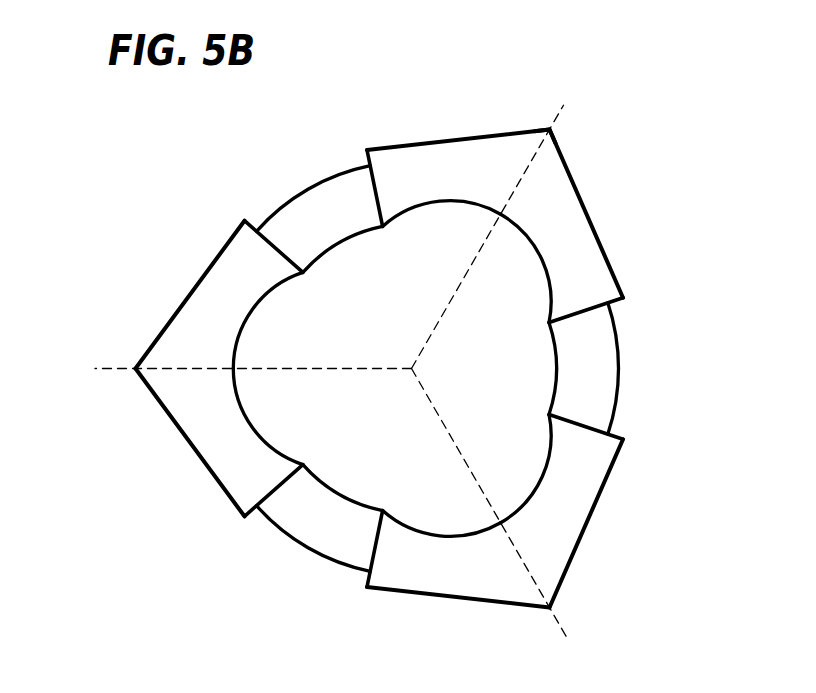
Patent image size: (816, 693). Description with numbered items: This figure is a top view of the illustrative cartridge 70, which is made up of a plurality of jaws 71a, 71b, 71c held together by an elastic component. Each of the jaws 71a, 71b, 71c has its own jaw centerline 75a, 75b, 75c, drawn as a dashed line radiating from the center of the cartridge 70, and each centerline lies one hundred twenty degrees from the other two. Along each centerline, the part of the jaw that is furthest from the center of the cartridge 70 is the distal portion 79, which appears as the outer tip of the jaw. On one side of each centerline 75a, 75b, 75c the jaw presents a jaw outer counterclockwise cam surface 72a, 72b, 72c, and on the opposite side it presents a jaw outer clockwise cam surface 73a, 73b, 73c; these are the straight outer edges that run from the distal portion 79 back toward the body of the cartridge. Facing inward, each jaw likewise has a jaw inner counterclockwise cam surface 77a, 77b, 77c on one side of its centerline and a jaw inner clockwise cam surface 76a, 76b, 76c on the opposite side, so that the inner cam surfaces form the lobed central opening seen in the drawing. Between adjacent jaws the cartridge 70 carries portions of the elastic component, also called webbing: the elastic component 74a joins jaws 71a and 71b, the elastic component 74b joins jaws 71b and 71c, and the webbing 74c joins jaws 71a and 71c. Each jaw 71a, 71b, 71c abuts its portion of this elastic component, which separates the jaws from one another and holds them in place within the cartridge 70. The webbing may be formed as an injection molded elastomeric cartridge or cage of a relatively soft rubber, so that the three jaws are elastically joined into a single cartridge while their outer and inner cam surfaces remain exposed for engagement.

The cartridge 70 is at (243, 153).
The jaw 71a is at (482, 157).
The jaw 71b is at (603, 448).
The jaw 71c is at (183, 317).
The jaw outer counterclockwise cam surface 72a is at (412, 142).
The jaw outer counterclockwise cam surface 72b is at (590, 517).
The jaw outer counterclockwise cam surface 72c is at (173, 427).
The jaw outer clockwise cam surface 73a is at (602, 243).
The jaw outer clockwise cam surface 73b is at (450, 602).
The jaw outer clockwise cam surface 73c is at (217, 254).
The elastic component 74a is at (542, 348).
The elastic component 74b is at (328, 482).
The webbing 74c is at (347, 237).
The jaw centerline 75a is at (558, 113).
The jaw centerline 75b is at (560, 627).
The jaw centerline 75c is at (112, 372).
The jaw inner clockwise cam surface 76a is at (530, 247).
The jaw inner clockwise cam surface 76b is at (422, 537).
The jaw inner clockwise cam surface 76c is at (252, 310).
The jaw inner counterclockwise cam surface 77a is at (463, 210).
The jaw inner counterclockwise cam surface 77b is at (552, 460).
The jaw inner counterclockwise cam surface 77c is at (255, 435).
The distal portion 79 is at (555, 132).